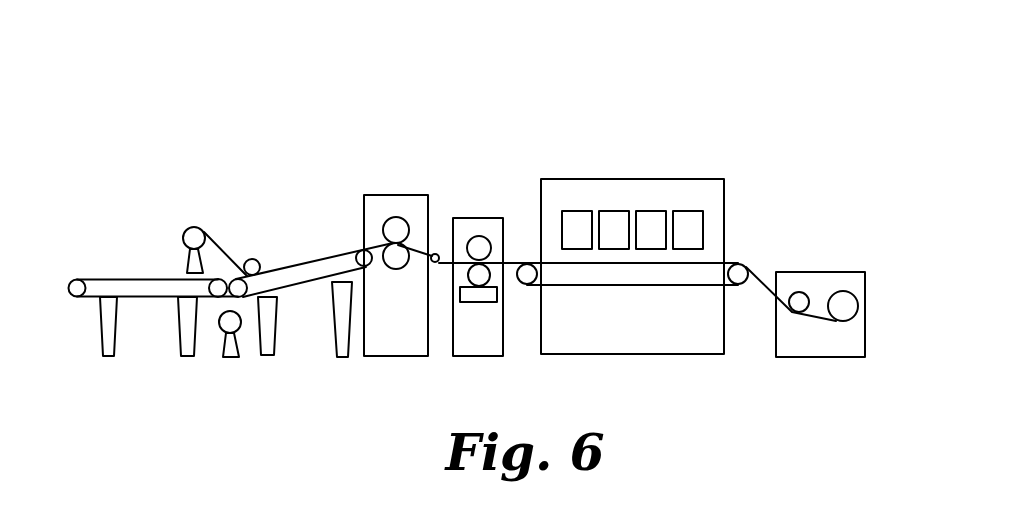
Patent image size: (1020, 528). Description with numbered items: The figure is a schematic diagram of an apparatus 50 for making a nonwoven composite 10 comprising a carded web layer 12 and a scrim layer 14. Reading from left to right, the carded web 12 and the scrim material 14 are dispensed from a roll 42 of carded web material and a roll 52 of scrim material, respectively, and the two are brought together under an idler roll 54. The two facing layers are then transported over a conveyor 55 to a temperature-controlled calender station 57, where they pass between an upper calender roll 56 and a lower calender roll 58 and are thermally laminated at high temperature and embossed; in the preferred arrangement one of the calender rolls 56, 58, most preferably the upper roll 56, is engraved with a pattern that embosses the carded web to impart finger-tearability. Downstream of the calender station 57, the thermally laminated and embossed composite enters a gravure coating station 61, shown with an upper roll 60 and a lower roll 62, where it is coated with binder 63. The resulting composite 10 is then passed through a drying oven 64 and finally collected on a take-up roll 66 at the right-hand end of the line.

The laminating apparatus 50 is at (670, 123).
The carded web 12 is at (225, 298).
The roll of scrim material 52 is at (190, 237).
The scrim layer 14 is at (225, 253).
The idler roll 54 is at (257, 261).
The roll of carded web material 42 is at (237, 326).
The conveyor 55 is at (332, 255).
The calender station 57 is at (415, 192).
The upper calender roll 56 is at (396, 218).
The calender roll 58 is at (396, 264).
The gravure coating station 61 is at (493, 218).
The upper roller 60 is at (479, 243).
The lower roller 62 is at (488, 275).
The binder 63 is at (475, 297).
The drying oven 64 is at (613, 185).
The nonwoven composite 10 is at (762, 272).
The roll 66 is at (843, 292).